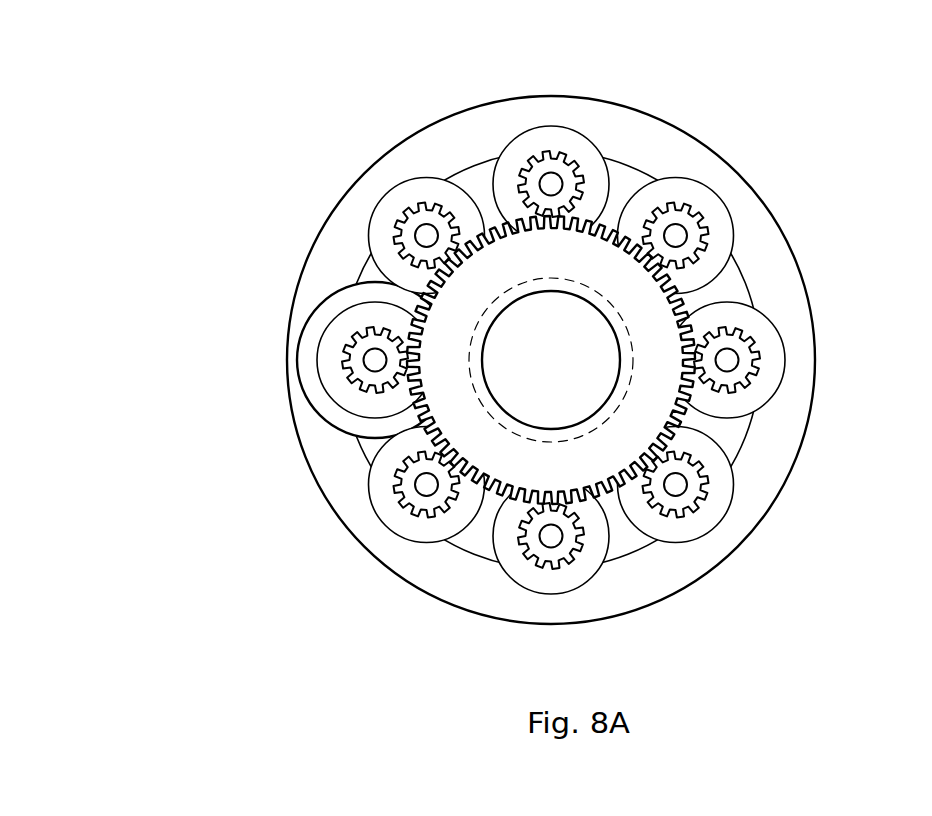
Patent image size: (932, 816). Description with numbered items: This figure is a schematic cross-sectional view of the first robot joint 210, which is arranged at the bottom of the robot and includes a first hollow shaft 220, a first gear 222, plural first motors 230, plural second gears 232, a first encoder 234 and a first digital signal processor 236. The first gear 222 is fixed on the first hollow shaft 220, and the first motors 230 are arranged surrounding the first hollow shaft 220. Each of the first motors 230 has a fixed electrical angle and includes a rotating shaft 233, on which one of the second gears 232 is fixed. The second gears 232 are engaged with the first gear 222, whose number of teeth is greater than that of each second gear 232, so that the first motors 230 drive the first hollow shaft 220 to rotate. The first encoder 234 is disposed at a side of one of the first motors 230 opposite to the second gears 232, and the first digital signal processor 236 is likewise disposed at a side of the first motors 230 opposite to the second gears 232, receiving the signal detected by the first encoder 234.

The first robot joint 210 is at (232, 177).
The first hollow shaft 220 is at (470, 382).
The first gear 222 is at (510, 458).
The first motors 230 is at (715, 208).
The second gears 232 is at (680, 205).
The rotating shaft 233 is at (676, 236).
The first encoder 234 is at (312, 357).
The first digital signal processor 236 is at (370, 273).